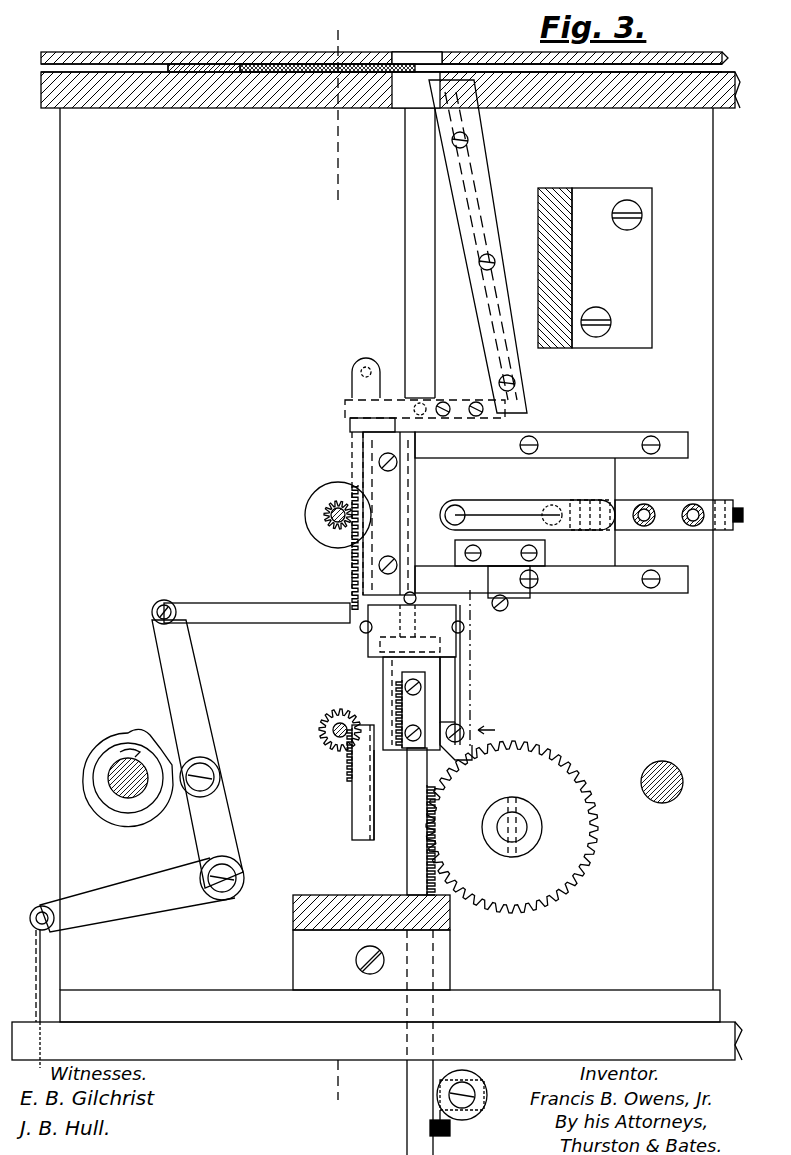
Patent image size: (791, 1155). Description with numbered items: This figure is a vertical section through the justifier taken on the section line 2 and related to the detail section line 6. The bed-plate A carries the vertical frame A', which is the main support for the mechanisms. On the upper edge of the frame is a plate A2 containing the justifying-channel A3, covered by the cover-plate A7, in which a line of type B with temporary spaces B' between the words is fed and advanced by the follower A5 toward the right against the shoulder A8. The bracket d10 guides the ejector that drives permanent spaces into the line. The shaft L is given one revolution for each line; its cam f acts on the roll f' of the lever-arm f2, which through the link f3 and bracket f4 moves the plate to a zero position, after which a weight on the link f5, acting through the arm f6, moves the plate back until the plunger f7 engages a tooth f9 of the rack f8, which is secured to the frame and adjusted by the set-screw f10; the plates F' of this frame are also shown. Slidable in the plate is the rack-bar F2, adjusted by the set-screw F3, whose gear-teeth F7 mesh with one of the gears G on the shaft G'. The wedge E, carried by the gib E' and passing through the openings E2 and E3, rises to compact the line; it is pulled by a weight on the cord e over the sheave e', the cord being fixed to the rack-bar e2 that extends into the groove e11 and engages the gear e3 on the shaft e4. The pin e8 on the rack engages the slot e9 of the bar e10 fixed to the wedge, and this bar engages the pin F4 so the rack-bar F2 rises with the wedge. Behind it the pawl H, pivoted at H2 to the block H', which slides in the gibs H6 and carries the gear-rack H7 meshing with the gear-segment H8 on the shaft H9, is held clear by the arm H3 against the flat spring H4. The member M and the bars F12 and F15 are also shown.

The section line 2 2 is at (336, 569).
The section line 6 6 is at (479, 663).
The bed-plate A is at (377, 1025).
The vertical frame A' is at (386, 549).
The plate A2 is at (172, 108).
The justifying-channel A3 is at (722, 72).
The follower A5 is at (218, 64).
The cover-plate A7 is at (388, 52).
The shoulder A8 is at (175, 64).
The line of type B is at (326, 52).
The temporary spaces B' is at (481, 52).
The wedge E is at (429, 253).
The gib E' is at (478, 246).
The opening E2 is at (416, 90).
The opening E3 is at (418, 60).
The cord e is at (448, 1125).
The sheave e' is at (400, 1025).
The rack-bar e2 is at (421, 403).
The gear e3 is at (512, 827).
The shaft e4 is at (522, 818).
The pin e8 is at (430, 405).
The slot e9 is at (395, 404).
The bar e10 is at (476, 402).
The groove e11 is at (405, 262).
The bracket d10 is at (613, 268).
The frame plates F' is at (551, 512).
The rack-bar F2 is at (363, 458).
The set-screw F3 is at (350, 438).
The pin F4 is at (361, 372).
The gear-teeth F7 is at (352, 570).
The bar F12 is at (352, 806).
The rack bar F15 is at (360, 786).
The cam f is at (128, 777).
The roll f' is at (208, 775).
The lever-arm f2 is at (198, 760).
The link f3 is at (296, 623).
The bracket f4 is at (510, 605).
The link f5 is at (44, 962).
The arm f6 is at (132, 895).
The plunger f7 is at (552, 506).
The rack f8 is at (674, 503).
The tooth f9 is at (588, 530).
The set-screw f10 is at (740, 522).
The gears G is at (332, 521).
The shaft G' is at (317, 506).
The pawl H is at (412, 631).
The block H' is at (409, 821).
The pivot H2 is at (455, 650).
The arm H3 is at (458, 698).
The flat spring H4 is at (402, 622).
The gibs H6 is at (365, 676).
The gear-rack H7 is at (413, 710).
The gear-segment H8 is at (385, 680).
The shaft H9 is at (335, 740).
The shaft L is at (125, 800).
The shaft M is at (662, 803).